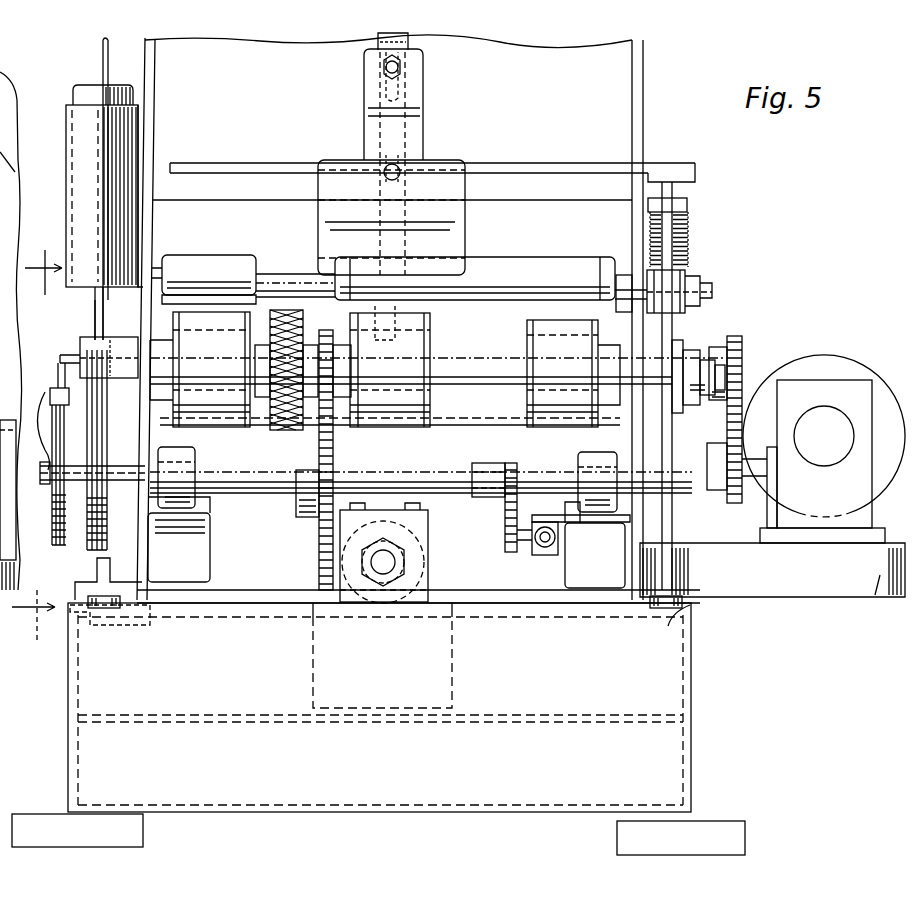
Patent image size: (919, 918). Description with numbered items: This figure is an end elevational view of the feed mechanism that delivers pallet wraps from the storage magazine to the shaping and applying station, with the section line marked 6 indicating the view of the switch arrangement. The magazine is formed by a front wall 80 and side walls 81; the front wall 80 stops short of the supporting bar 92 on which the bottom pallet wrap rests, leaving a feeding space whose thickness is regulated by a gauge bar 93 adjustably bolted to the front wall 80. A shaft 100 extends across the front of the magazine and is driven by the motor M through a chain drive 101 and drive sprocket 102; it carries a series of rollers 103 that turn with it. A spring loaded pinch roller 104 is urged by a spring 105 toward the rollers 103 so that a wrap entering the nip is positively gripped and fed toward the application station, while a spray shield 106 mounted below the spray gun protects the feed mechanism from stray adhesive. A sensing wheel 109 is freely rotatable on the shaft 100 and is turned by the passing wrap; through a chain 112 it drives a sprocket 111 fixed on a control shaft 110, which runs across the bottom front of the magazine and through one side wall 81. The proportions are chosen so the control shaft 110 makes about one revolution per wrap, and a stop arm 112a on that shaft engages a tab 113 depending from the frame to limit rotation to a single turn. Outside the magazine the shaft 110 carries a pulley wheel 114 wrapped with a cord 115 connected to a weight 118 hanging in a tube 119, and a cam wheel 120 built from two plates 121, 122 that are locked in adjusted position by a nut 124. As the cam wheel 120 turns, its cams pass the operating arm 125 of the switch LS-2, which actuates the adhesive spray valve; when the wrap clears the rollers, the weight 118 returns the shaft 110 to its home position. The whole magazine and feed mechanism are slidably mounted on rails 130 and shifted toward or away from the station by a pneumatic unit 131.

The front wall 80 is at (642, 94).
The side walls 81 is at (145, 68).
The supporting bar 92 is at (380, 330).
The gauge bar 93 is at (408, 214).
The shaft 100 is at (499, 360).
The chain drive 101 is at (742, 380).
The drive sprocket 102 is at (712, 347).
The rollers 103 is at (203, 428).
The pinch roller 104 is at (567, 262).
The spring 105 is at (689, 244).
The spray shield 106 is at (462, 218).
The sensing wheel 109 is at (277, 437).
The control shaft 110 is at (436, 494).
The sprocket 111 is at (318, 552).
The chain 112 is at (333, 447).
The stop arm 112a is at (506, 530).
The tab 113 is at (546, 558).
The pulley wheel 114 is at (100, 432).
The cord 115 is at (96, 327).
The weight 118 is at (74, 98).
The tube 119 is at (70, 206).
The cam wheel 120 is at (50, 410).
The plate 121 is at (45, 452).
The plate 122 is at (93, 550).
The nut 124 is at (41, 488).
The operating arm 125 is at (61, 372).
The rails 130 is at (100, 607).
The pneumatic unit 131 is at (448, 582).
The switch LS-2 is at (84, 346).
The motor M is at (840, 359).
The section line 6- 6 is at (37, 444).